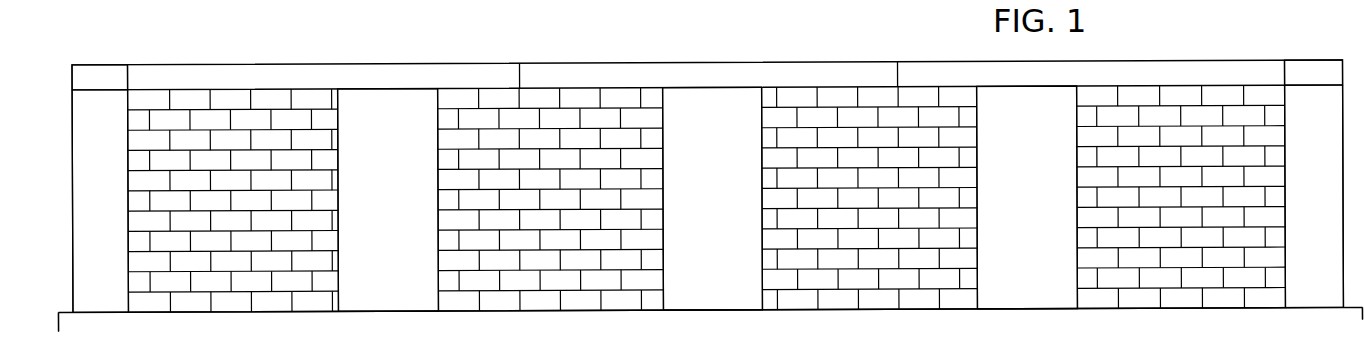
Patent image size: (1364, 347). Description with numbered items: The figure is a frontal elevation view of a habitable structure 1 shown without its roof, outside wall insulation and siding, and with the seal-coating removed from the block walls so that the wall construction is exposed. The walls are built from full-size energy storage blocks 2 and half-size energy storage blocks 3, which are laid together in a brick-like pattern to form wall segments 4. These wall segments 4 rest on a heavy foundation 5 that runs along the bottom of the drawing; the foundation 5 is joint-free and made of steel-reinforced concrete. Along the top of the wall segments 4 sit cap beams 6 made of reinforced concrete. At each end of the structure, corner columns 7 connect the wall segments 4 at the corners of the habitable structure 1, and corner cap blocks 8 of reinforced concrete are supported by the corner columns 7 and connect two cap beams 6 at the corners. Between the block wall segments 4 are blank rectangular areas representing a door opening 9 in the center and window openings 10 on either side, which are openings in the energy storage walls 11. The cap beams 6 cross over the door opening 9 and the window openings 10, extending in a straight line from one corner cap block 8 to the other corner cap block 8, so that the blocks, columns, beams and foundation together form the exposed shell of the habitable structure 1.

The habitable structure 1 is at (70, 60).
The full-size energy storage blocks 2 is at (450, 139).
The half-size energy storage blocks 3 is at (450, 198).
The wall segments 4 is at (440, 258).
The foundation 5 is at (105, 328).
The cap beams 6 is at (707, 75).
The corner columns 7 is at (707, 198).
The corner cap blocks 8 is at (707, 75).
The door openings 9 is at (713, 198).
The window openings 10 is at (708, 198).
The energy storage walls 11 is at (133, 322).